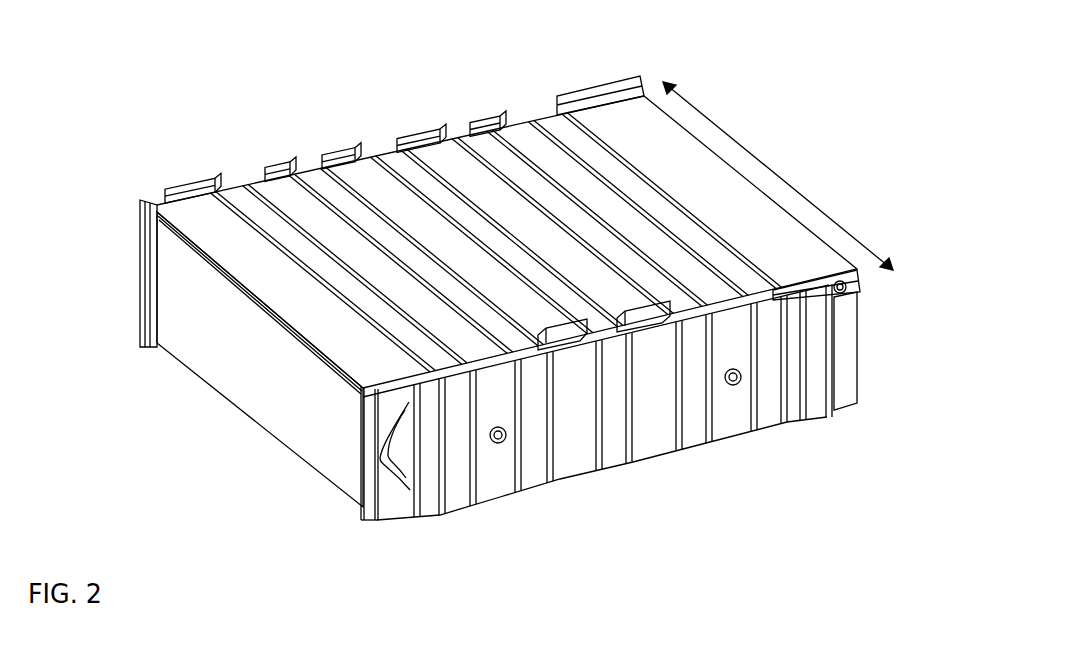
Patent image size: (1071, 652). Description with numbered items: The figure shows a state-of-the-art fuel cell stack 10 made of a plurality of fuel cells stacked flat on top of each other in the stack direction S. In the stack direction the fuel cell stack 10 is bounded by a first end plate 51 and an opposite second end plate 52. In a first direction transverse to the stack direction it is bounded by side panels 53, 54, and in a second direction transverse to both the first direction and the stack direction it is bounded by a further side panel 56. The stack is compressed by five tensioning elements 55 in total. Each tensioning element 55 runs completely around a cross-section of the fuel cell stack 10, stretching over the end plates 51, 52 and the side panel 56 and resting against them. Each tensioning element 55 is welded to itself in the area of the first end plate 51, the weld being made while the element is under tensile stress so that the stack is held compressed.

The fuel cell stack 10 is at (103, 162).
The first end plate 51 is at (663, 433).
The second end plate 52 is at (140, 193).
The side panel 53 is at (283, 415).
The side panel 54 is at (847, 360).
The tensioning element 55 is at (237, 203).
The side panel 56 is at (378, 190).